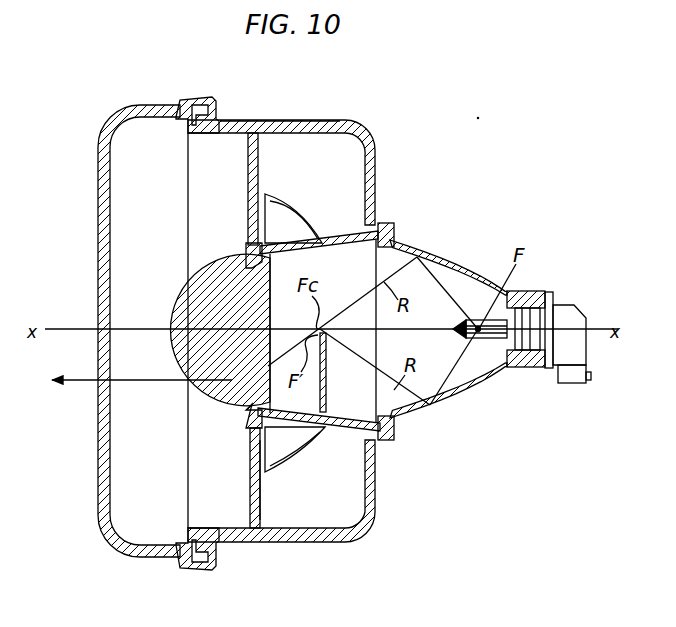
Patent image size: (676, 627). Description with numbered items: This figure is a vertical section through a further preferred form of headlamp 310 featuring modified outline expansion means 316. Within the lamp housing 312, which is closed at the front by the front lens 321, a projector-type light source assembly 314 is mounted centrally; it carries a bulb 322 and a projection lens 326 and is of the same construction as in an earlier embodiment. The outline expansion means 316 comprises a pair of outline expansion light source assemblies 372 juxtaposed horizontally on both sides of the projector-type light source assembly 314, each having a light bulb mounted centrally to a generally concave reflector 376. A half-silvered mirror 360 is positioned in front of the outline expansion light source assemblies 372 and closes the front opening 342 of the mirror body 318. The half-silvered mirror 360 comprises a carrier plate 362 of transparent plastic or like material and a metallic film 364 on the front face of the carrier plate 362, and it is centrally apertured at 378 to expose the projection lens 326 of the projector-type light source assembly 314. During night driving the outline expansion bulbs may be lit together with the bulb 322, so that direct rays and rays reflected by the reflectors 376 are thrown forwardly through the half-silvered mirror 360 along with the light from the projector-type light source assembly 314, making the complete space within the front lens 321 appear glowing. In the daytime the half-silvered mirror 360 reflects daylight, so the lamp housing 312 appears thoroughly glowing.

The headlamp 310 is at (478, 117).
The lamp housing 312 is at (374, 130).
The projector-type light source assembly 314 is at (433, 244).
The outline expansion means 316 is at (247, 181).
The mirror body 318 is at (273, 120).
The front lens 321 is at (99, 238).
The bulb 322 is at (494, 372).
The projection lens 326 is at (222, 306).
The front opening 342 is at (177, 556).
The half-silvered mirror 360 is at (248, 503).
The carrier plate 362 is at (262, 490).
The metallic film 364 is at (249, 448).
The outline expansion light source assembly 372 is at (290, 202).
The reflector 376 is at (280, 200).
The central aperture 378 is at (245, 270).